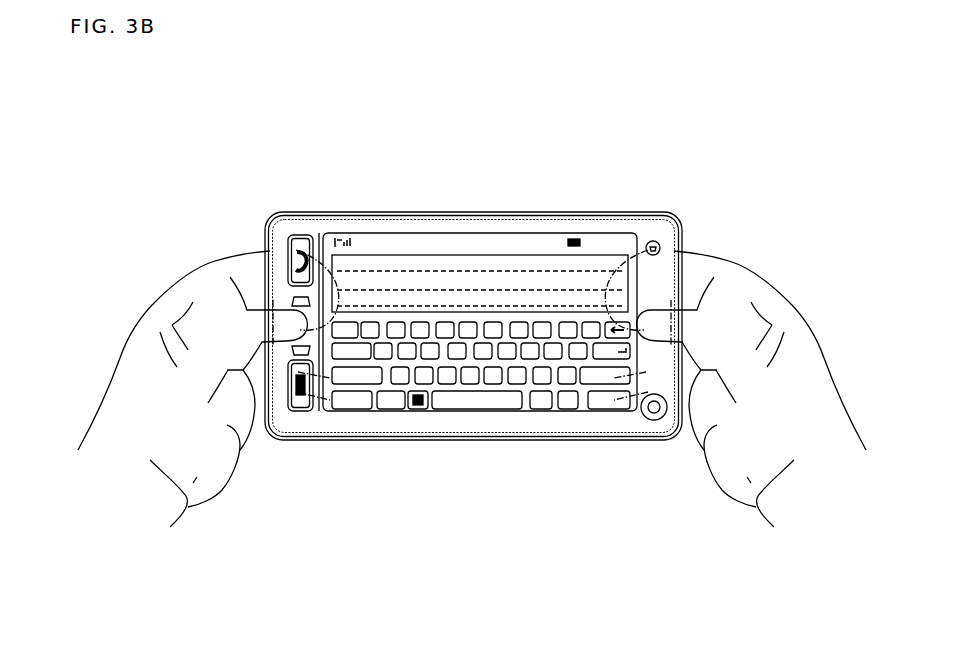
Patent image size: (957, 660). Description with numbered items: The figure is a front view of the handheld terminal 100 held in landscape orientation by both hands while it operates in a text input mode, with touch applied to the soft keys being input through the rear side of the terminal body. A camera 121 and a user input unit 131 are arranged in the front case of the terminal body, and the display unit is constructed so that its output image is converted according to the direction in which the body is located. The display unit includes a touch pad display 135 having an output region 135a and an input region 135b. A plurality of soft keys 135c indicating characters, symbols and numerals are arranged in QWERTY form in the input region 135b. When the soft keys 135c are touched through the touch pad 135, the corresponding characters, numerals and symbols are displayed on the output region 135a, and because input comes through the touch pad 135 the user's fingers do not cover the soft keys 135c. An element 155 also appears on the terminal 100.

The handheld terminal 100 is at (240, 130).
The camera 121 is at (653, 241).
The user input unit 131 is at (300, 235).
The touch pad 135 is at (510, 233).
The output region 135a is at (423, 265).
The input region 135b is at (423, 410).
The soft keys 135c is at (502, 353).
The audio output module / navigation key 155 is at (653, 420).